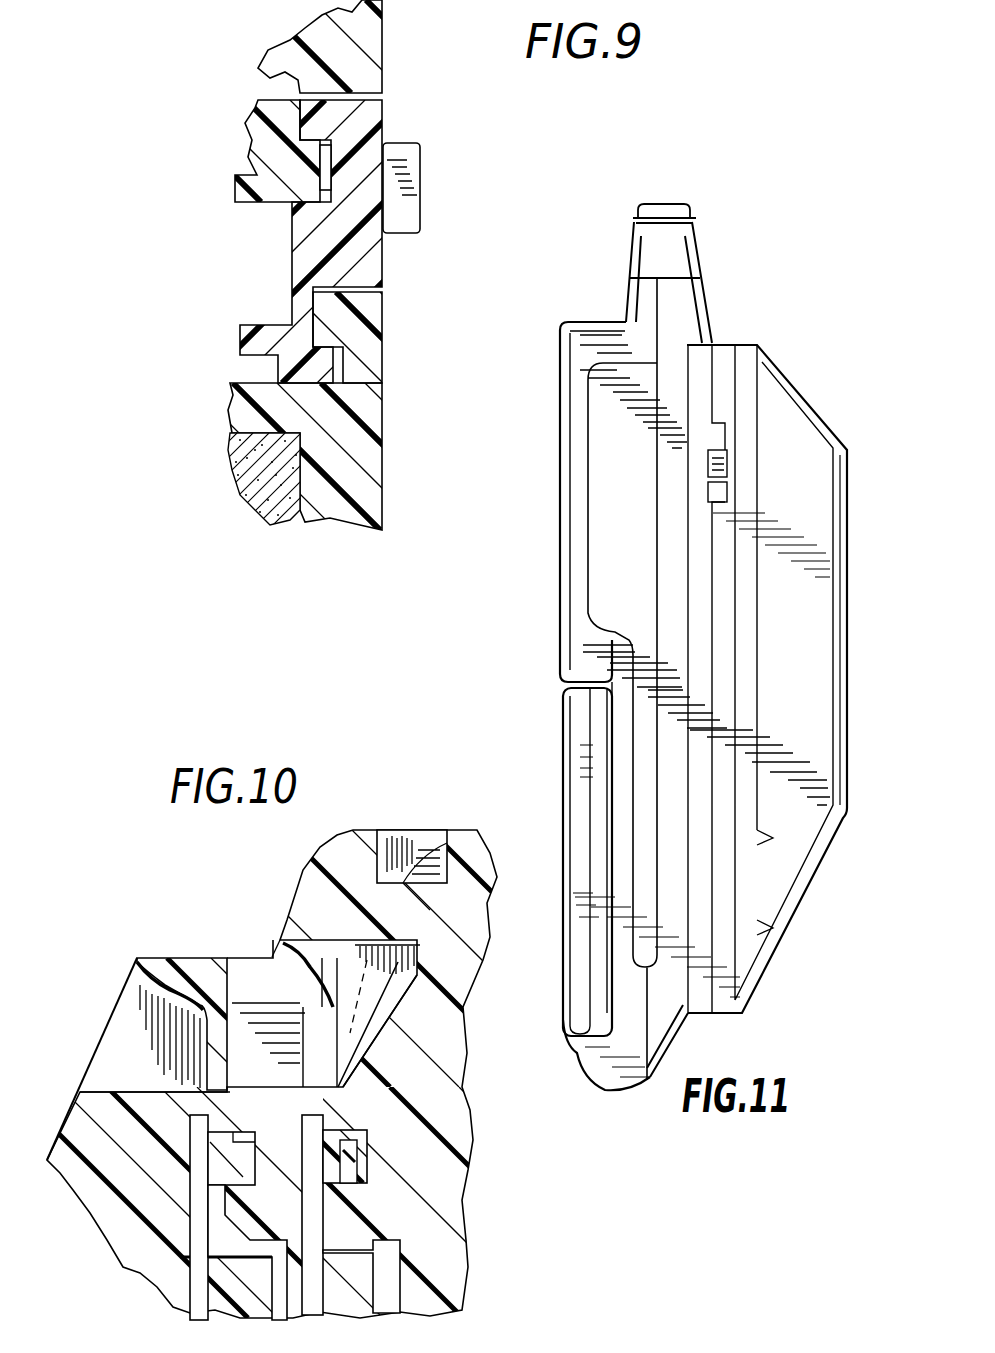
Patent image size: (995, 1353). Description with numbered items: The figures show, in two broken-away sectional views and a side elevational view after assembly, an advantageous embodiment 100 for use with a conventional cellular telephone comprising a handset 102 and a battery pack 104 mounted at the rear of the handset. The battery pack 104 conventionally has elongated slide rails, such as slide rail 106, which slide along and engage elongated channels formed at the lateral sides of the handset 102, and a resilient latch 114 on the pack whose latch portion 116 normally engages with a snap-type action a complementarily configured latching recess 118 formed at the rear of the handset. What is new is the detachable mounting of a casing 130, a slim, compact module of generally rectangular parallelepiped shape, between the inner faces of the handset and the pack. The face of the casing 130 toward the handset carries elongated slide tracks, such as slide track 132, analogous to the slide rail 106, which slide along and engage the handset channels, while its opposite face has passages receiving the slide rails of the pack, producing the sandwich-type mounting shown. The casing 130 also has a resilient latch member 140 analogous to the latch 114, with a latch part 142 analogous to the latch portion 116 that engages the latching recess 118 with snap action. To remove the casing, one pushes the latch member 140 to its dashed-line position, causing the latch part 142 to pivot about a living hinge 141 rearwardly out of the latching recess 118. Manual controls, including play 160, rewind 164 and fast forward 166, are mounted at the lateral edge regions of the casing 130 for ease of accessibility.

In FIG. 9, the embodiment 100 is at (298, 54).
In FIG. 9, the handset 102 is at (365, 75).
In FIG. 10, the handset 102 is at (453, 1123).
In FIG. 11, the handset 102 is at (559, 560).
In FIG. 9, the battery pack 104 is at (367, 447).
In FIG. 10, the battery pack 104 is at (108, 1197).
In FIG. 11, the battery pack 104 is at (847, 673).
In FIG. 9, the slide rail 106 is at (367, 358).
In FIG. 10, the resilient latch 114 is at (163, 975).
In FIG. 10, the latch portion 116 is at (223, 1175).
In FIG. 10, the latching recess 118 is at (367, 1183).
In FIG. 11, the casing 130 is at (700, 407).
In FIG. 9, the slide track 132 is at (355, 133).
In FIG. 10, the resilient latch member 140 is at (267, 958).
In FIG. 10, the living hinge 141 is at (307, 1087).
In FIG. 10, the latch part 142 is at (335, 1160).
In FIG. 9, the play control 160 is at (408, 218).
In FIG. 11, the rewind control 164 is at (725, 462).
In FIG. 11, the fast forward control 166 is at (722, 490).